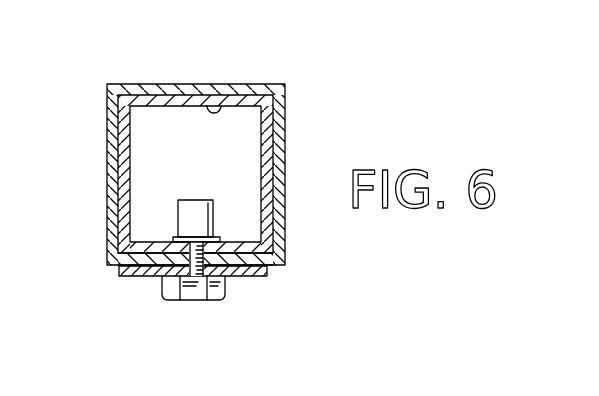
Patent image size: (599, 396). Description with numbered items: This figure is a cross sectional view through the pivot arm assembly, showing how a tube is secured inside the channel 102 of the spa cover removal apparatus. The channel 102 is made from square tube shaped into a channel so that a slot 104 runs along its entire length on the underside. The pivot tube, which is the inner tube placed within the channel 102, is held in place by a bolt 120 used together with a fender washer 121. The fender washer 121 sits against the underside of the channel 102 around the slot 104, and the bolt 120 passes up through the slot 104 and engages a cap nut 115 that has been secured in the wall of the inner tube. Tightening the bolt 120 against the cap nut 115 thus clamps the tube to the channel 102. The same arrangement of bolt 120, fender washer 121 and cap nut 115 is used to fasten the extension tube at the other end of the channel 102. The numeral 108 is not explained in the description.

The channel 102 is at (164, 85).
The slot 104 is at (230, 263).
The recess 108 is at (222, 106).
The cap nut 115 is at (187, 200).
The bolt 120 is at (176, 312).
The fender washer 121 is at (127, 277).